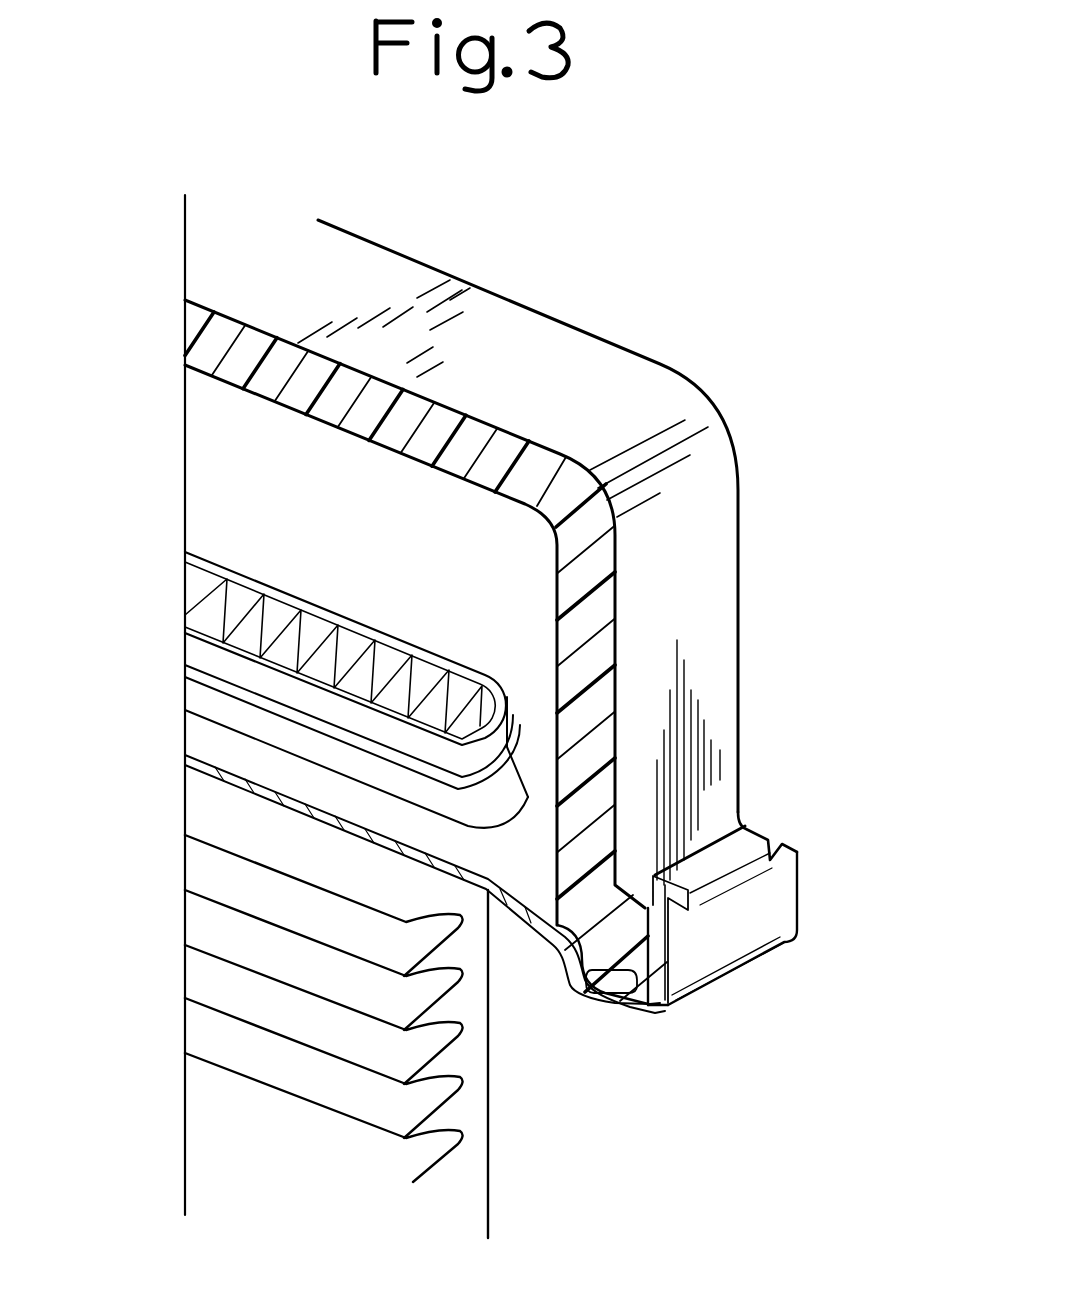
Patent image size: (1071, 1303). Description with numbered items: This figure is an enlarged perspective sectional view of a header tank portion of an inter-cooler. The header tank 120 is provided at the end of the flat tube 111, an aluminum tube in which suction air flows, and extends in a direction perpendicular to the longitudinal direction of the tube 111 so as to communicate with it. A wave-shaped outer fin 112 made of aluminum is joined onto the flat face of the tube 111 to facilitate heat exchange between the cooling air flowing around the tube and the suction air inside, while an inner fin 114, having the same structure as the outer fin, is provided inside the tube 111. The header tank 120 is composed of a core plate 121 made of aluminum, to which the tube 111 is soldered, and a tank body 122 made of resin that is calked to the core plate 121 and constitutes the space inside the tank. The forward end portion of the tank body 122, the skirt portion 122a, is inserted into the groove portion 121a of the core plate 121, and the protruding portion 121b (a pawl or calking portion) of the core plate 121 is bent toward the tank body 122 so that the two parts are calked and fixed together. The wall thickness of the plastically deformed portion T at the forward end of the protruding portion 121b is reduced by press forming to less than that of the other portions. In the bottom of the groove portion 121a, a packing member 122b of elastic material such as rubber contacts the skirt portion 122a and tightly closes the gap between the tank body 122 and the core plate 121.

The header tank 120 is at (578, 322).
The tank body 122 is at (683, 612).
The skirt portion 122a is at (617, 942).
The packing member 122b is at (583, 1003).
The inner fin 114 is at (185, 568).
The core plate 121 is at (717, 920).
The groove portion 121a is at (657, 1010).
The protruding portion 121b is at (727, 853).
The portion of reduced wall thickness T is at (752, 873).
The flat tube 111 is at (488, 1113).
The outer fin 112 is at (458, 1135).